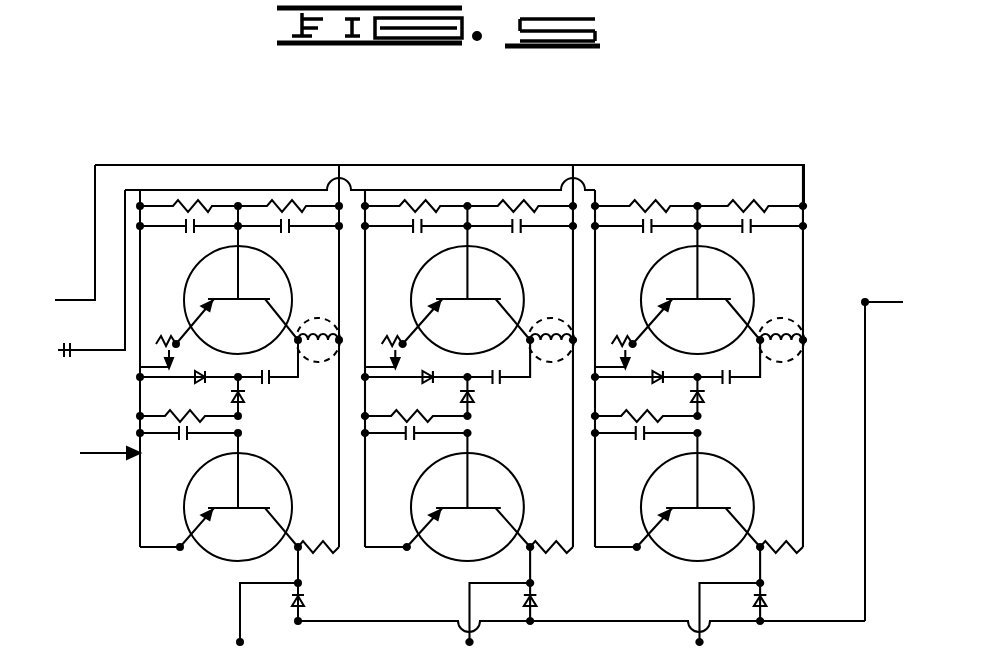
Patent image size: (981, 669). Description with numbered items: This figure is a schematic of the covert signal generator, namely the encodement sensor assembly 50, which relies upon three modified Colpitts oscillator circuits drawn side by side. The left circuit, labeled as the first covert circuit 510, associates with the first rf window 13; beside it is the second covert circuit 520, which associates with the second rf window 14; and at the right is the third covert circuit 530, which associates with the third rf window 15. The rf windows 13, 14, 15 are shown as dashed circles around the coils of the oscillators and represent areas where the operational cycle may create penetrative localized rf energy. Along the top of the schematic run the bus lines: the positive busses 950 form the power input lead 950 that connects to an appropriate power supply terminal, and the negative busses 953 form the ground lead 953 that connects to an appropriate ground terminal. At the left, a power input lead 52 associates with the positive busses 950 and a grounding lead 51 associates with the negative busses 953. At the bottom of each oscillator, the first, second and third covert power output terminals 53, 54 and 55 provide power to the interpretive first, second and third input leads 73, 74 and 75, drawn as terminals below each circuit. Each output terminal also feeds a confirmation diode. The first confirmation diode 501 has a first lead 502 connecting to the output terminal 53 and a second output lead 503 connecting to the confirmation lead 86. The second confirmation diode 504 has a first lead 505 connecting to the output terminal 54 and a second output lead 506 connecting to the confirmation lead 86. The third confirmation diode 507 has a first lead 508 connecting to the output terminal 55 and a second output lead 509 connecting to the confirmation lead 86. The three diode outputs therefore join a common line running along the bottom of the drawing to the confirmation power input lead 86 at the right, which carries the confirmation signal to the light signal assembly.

The first rf window 13 is at (320, 362).
The second rf window 14 is at (551, 362).
The third rf window 15 is at (781, 362).
The encodement sensor assembly 50 is at (92, 455).
The grounding lead 51 is at (120, 352).
The power input lead 52 is at (78, 300).
The first covert power output terminal 53 is at (297, 583).
The second covert power output terminal 54 is at (509, 600).
The third covert power output terminal 55 is at (739, 600).
The first interpretive power input lead 73 is at (240, 642).
The second interpretive power input lead 74 is at (474, 620).
The third interpretive power input lead 75 is at (704, 620).
The confirmation power input lead 86 is at (865, 300).
The first confirmation diode 501 is at (297, 616).
The first lead of first confirmation diode 502 is at (301, 584).
The second output lead of first confirmation diode 503 is at (304, 600).
The second confirmation diode 504 is at (536, 636).
The first lead of second confirmation diode 505 is at (572, 576).
The second output lead of second confirmation diode 506 is at (573, 606).
The third confirmation diode 507 is at (766, 636).
The first lead of third confirmation diode 508 is at (802, 576).
The diode 509 is at (803, 606).
The first oscillator stage 510 is at (256, 139).
The second covert circuit 520 is at (510, 139).
The third covert circuit 530 is at (725, 137).
The power input lead 950 is at (336, 200).
The ground lead 953 is at (140, 200).